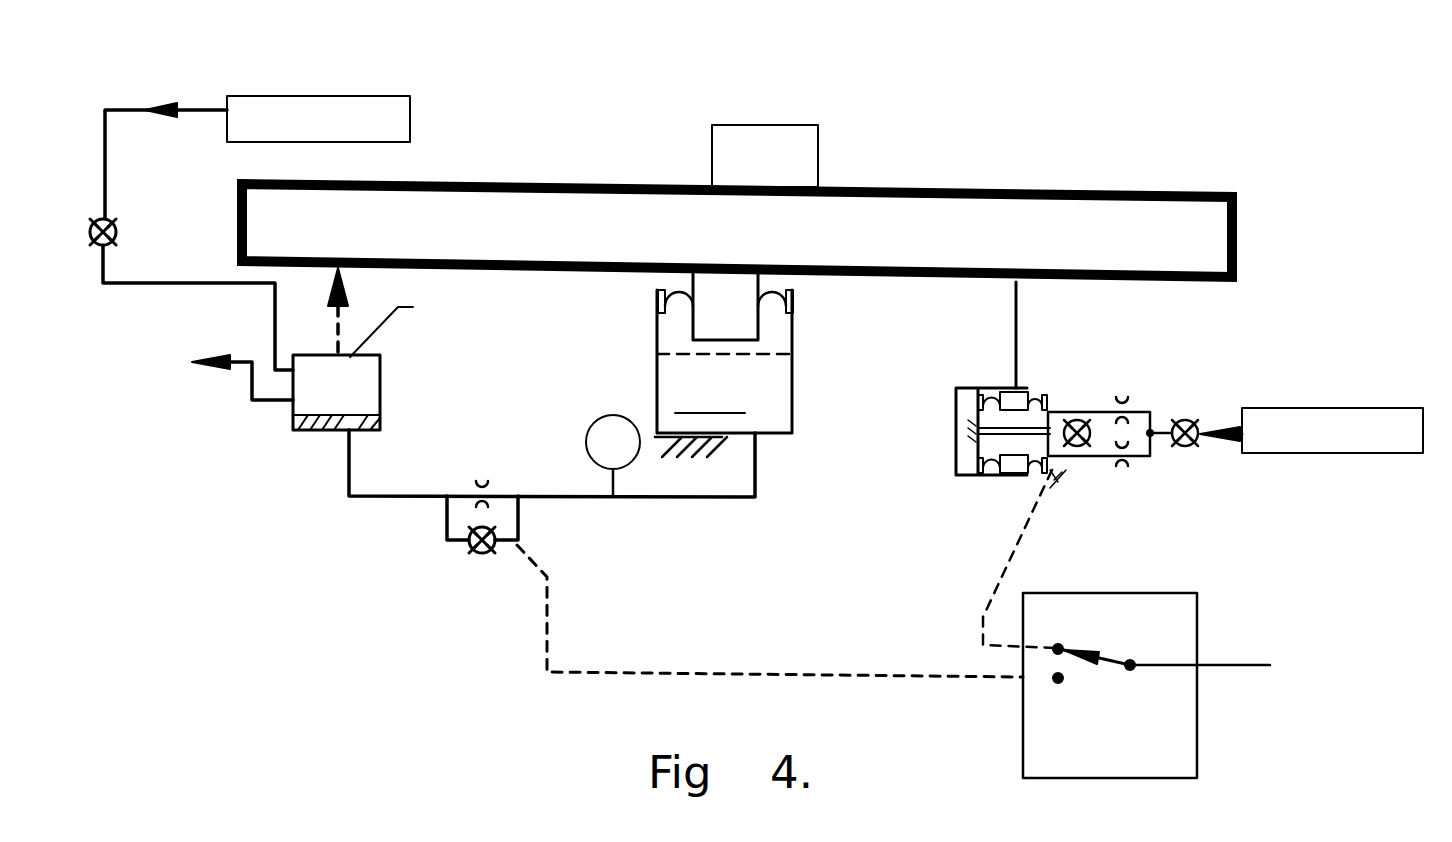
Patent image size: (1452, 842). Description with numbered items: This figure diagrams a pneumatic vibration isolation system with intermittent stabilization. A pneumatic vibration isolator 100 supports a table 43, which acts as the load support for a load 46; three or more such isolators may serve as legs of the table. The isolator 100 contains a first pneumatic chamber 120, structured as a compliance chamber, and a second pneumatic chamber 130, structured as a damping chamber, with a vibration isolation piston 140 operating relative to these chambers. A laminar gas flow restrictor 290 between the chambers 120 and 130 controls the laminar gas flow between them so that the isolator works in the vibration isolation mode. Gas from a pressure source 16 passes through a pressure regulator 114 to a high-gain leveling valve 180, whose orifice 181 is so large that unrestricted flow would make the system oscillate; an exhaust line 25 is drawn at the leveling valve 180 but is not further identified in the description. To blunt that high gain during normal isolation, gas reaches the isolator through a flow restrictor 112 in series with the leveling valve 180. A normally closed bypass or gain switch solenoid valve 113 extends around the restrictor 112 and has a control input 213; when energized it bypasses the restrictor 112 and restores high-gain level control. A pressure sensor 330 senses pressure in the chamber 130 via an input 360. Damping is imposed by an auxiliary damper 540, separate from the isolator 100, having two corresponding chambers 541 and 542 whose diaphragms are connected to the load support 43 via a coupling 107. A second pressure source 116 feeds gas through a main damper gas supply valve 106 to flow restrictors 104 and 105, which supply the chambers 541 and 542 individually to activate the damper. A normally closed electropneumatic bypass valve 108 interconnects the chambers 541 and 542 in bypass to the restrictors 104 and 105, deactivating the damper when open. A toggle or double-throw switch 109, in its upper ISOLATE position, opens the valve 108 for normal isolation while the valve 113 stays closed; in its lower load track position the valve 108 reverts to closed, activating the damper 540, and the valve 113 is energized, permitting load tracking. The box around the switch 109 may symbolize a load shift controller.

The pressure source 16 is at (292, 95).
The pressure regulator 114 is at (118, 226).
The exhaust line 25 is at (243, 358).
The high-gain leveling valve 180 is at (293, 417).
The orifice 181 is at (340, 428).
The pressure sensor 330 is at (590, 420).
The input 360 is at (603, 483).
The flow restrictor 112 is at (480, 478).
The bypass or gain switch solenoid valve 113 is at (487, 555).
The control input 213 is at (793, 673).
The load 46 is at (783, 176).
The table 43 is at (785, 240).
The vibration isolation piston 140 is at (728, 322).
The first pneumatic chamber 120 is at (777, 333).
The laminar gas flow restrictor 290 is at (736, 355).
The second pneumatic chamber 130 is at (710, 396).
The pneumatic vibration isolator 100 is at (792, 433).
The coupling 107 is at (955, 445).
The auxiliary damper 540 is at (1020, 473).
The damper chamber 542 is at (1042, 476).
The damper chamber 541 is at (1045, 398).
The bypass valve 108 is at (1088, 446).
The flow restrictor 105 is at (1122, 468).
The flow restrictor 104 is at (1122, 397).
The main damper gas supply valve 106 is at (1190, 447).
The pressure source 116 is at (1322, 453).
The toggle or double-throw switch 109 is at (1115, 660).